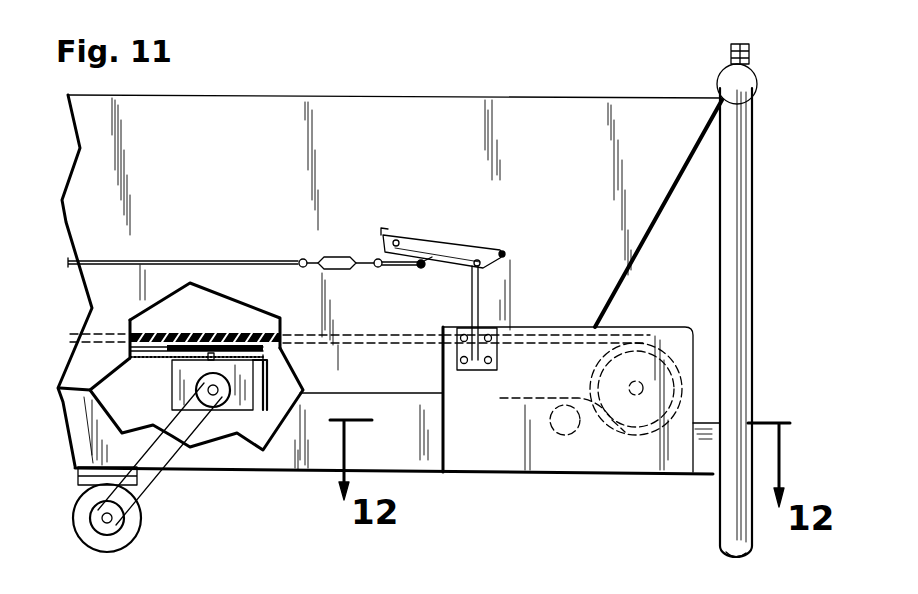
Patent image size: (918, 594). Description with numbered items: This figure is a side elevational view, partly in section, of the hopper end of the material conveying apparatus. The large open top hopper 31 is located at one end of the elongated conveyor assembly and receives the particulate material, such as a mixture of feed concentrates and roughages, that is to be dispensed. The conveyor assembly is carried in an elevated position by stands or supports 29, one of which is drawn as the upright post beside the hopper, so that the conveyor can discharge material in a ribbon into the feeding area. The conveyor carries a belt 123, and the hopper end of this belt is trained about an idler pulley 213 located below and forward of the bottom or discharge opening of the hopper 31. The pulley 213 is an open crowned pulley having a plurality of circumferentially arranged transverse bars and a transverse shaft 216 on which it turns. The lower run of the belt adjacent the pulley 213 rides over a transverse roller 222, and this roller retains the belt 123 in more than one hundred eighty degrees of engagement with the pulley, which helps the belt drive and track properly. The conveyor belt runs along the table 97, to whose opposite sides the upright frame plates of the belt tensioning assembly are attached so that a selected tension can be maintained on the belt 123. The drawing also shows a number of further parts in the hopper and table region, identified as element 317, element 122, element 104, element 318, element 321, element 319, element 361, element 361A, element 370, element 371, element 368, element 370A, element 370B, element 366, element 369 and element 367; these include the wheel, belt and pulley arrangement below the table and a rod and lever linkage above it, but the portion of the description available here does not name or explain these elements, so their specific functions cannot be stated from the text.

The hopper 31 is at (461, 104).
The stands or supports 29 is at (753, 189).
The table 97 is at (86, 417).
The belt 123 is at (237, 331).
The hatched bar 317 is at (193, 332).
The rail 122 is at (146, 333).
The guide strip 104 is at (152, 362).
The pulley 318 is at (254, 405).
The belt 321 is at (160, 485).
The wheel 319 is at (133, 531).
The control rod 361 is at (183, 260).
The turnbuckle 361A is at (334, 257).
The link 370 is at (400, 260).
The pivot 371 is at (422, 268).
The lever 368 is at (423, 244).
The lever hole 370A is at (391, 241).
The lever tip 370B is at (486, 250).
The lever assembly 366 is at (467, 224).
The pin 369 is at (471, 271).
The rod with bracket 367 is at (483, 288).
The idler pulley 213 is at (600, 370).
The transverse shaft 216 is at (645, 343).
The transverse roller 222 is at (550, 431).